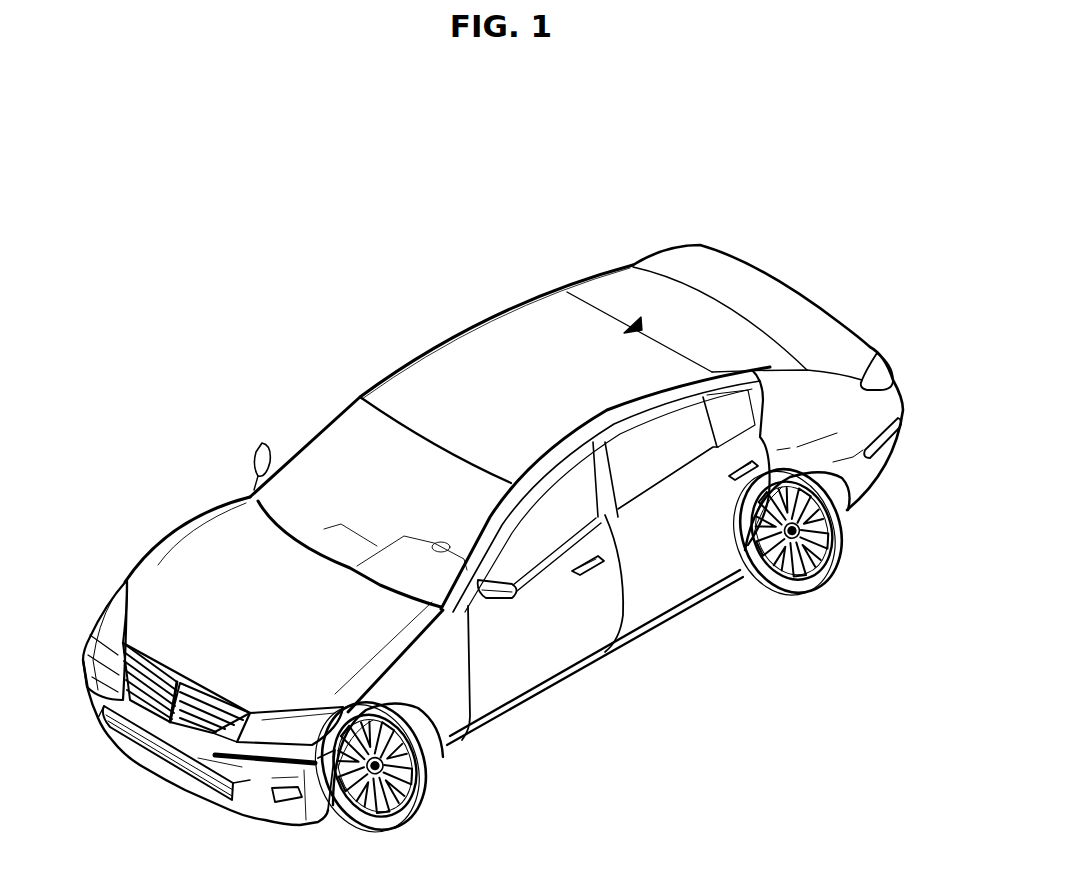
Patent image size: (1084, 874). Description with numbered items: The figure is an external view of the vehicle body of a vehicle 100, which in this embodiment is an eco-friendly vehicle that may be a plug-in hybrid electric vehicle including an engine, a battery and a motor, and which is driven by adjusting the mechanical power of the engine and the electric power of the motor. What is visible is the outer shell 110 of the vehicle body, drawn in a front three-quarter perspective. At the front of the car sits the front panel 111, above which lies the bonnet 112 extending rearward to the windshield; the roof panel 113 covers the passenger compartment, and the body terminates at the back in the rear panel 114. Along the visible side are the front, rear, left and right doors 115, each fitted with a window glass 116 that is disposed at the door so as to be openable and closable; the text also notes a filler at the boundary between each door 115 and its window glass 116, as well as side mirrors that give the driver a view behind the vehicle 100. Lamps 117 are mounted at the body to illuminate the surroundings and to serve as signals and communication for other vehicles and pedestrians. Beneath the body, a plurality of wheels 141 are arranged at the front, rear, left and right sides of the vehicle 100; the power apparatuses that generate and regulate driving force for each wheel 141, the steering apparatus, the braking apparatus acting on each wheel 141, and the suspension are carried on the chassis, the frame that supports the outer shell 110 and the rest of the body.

The vehicle 100 is at (421, 182).
The outer shell 110 is at (648, 257).
The front panel 111 is at (250, 800).
The bonnet 112 is at (193, 553).
The roof panel 113 is at (490, 340).
The rear panel 114 is at (893, 392).
The doors 115 is at (583, 640).
The window glasses 116 is at (653, 450).
The lamps 117 is at (107, 612).
The wheels 141 is at (407, 777).